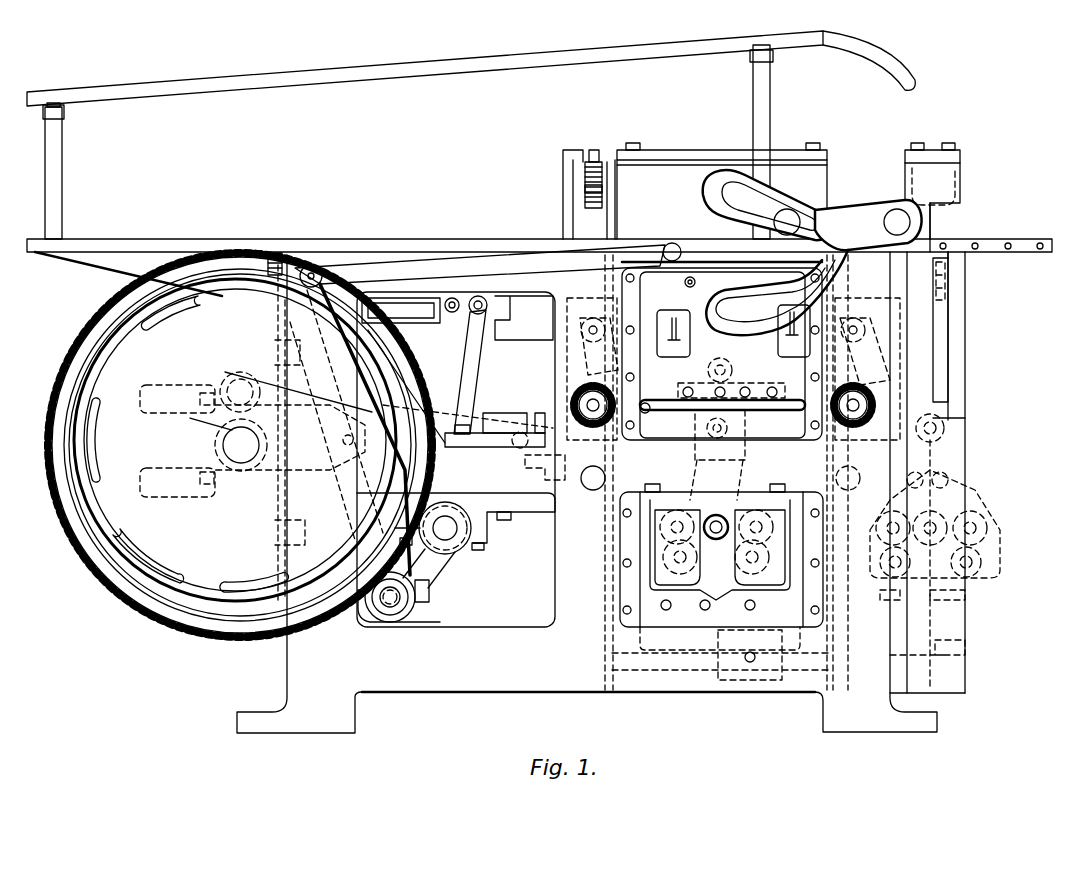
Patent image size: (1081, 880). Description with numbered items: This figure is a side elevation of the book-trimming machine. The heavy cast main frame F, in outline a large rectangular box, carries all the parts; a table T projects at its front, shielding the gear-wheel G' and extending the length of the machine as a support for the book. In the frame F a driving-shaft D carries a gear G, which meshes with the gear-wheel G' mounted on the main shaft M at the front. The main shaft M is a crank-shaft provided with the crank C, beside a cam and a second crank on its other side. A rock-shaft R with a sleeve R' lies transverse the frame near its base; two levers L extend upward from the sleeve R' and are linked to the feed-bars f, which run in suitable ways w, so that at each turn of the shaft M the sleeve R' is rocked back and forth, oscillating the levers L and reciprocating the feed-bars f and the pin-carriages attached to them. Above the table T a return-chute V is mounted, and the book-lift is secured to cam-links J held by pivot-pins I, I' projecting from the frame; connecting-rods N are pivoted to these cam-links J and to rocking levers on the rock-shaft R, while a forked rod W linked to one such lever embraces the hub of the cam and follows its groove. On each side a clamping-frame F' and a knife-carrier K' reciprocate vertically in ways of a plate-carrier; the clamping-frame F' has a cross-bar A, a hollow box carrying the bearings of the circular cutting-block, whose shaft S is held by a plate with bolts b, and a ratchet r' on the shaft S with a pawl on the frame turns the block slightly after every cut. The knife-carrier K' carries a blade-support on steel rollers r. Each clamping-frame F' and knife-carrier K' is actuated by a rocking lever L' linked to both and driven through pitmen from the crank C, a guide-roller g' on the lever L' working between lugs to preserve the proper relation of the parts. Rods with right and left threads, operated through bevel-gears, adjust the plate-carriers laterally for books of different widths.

The return-chute V is at (447, 66).
The table T is at (170, 240).
The gear-wheel G′ is at (97, 558).
The main shaft M is at (223, 444).
The crank C is at (233, 384).
The forked rod W is at (180, 486).
The main frame F is at (601, 492).
The ways w is at (401, 309).
The lever L is at (463, 365).
The feed-bar f is at (534, 300).
The gear G is at (448, 549).
The driving-shaft D is at (445, 528).
The rock-shaft R is at (390, 607).
The sleeve R′ is at (407, 616).
The connecting-rod N is at (480, 264).
The shaft S is at (609, 150).
The ratchet r′ is at (585, 192).
The bolts b is at (641, 148).
The cross-bar A is at (788, 199).
The clamping-frame F′ is at (722, 233).
The cam-link J is at (853, 208).
The pivot-pin I is at (787, 222).
The pivot-pin I′ is at (897, 222).
The knife-carrier K′ is at (722, 422).
The steel rollers r is at (652, 410).
The rocking lever L′ is at (721, 572).
The guide-roller g′ is at (716, 539).
The rollers l is at (711, 542).